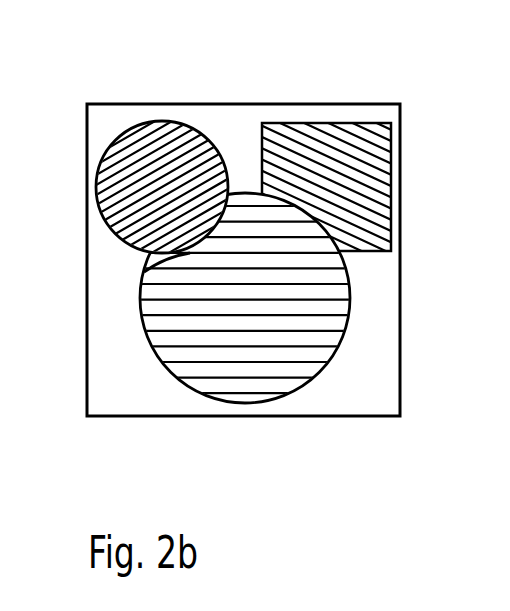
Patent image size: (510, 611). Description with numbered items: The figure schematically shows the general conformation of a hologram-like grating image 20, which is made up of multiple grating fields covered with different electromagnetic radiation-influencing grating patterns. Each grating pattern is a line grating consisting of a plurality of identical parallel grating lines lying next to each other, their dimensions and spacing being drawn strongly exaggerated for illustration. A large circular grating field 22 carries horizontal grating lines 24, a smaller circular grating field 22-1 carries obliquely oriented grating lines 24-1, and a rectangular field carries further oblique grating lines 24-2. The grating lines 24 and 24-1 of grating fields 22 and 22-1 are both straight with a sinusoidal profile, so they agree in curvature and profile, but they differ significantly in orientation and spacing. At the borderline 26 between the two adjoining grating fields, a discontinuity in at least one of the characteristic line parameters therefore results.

The hologram-like grating image 20 is at (258, 104).
The grating field 22 is at (245, 404).
The grating field 22-1 is at (134, 126).
The grating lines 24 is at (278, 363).
The grating lines 24-1 is at (185, 137).
The grating lines 24-2 is at (361, 138).
The borderline 26 is at (147, 271).